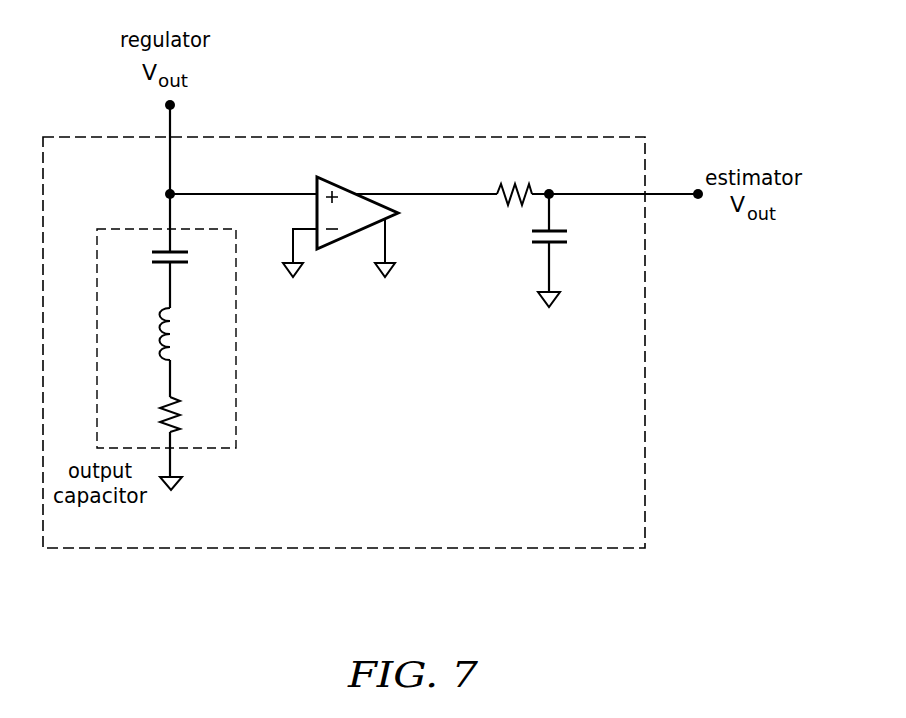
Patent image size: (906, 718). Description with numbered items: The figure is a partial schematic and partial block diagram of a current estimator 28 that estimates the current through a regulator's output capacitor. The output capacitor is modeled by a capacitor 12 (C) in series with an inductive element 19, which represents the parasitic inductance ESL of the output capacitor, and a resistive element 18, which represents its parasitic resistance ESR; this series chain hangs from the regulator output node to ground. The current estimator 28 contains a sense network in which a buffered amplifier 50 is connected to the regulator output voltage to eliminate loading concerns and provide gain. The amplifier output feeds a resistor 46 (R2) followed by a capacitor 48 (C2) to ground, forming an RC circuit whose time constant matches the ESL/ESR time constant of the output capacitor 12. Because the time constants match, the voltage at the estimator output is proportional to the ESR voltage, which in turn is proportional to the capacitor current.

The capacitor 12 is at (183, 264).
The inductive element 19 is at (172, 352).
The resistive element 18 is at (174, 406).
The buffered amplifier 50 is at (322, 178).
The resistor 46 is at (512, 203).
The capacitor 48 is at (536, 244).
The current estimator 28 is at (420, 549).